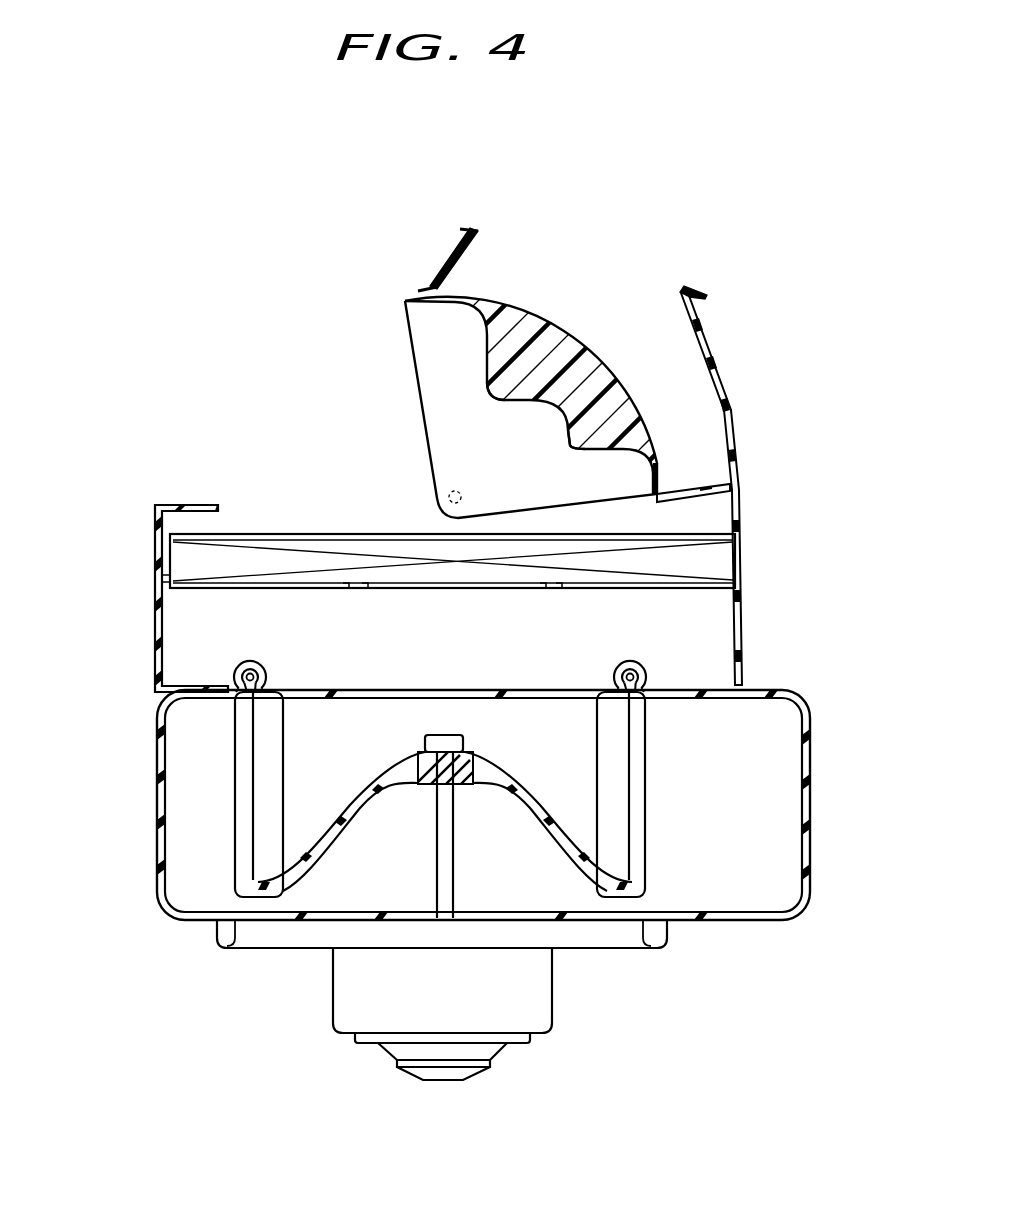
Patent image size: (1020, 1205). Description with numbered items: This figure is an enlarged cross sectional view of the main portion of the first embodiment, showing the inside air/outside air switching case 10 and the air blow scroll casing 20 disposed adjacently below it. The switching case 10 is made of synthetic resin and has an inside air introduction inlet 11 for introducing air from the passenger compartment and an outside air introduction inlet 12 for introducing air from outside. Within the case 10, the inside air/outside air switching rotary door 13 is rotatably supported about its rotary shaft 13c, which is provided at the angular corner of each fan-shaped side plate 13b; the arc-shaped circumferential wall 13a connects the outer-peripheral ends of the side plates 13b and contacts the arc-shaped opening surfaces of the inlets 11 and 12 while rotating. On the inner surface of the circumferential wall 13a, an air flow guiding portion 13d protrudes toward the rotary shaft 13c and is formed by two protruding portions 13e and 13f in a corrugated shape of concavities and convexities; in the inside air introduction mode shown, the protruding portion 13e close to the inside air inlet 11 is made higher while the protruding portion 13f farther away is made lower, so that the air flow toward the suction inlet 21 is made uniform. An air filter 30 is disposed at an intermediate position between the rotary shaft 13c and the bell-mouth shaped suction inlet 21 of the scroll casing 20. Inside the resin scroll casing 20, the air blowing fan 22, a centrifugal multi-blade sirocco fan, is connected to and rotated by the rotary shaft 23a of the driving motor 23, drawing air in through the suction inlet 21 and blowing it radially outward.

The inside air/outside air switching case 10 is at (705, 332).
The inside air introduction inlet 11 is at (320, 370).
The outside air introduction inlet 12 is at (623, 290).
The inside air/outside air switching rotary door 13 is at (642, 405).
The arc-shaped circumferential wall 13a is at (533, 317).
The fan-shaped side plate 13b is at (410, 353).
The rotary shaft 13c is at (680, 495).
The air flow guiding portion 13d is at (573, 447).
The protruding portion 13e is at (490, 400).
The protruding portion 13f is at (463, 502).
The air blow scroll casing 20 is at (160, 790).
The suction inlet 21 is at (352, 688).
The air blowing fan 22 is at (245, 830).
The driving motor 23 is at (543, 993).
The rotary shaft 23a is at (440, 838).
The air filter 30 is at (708, 563).